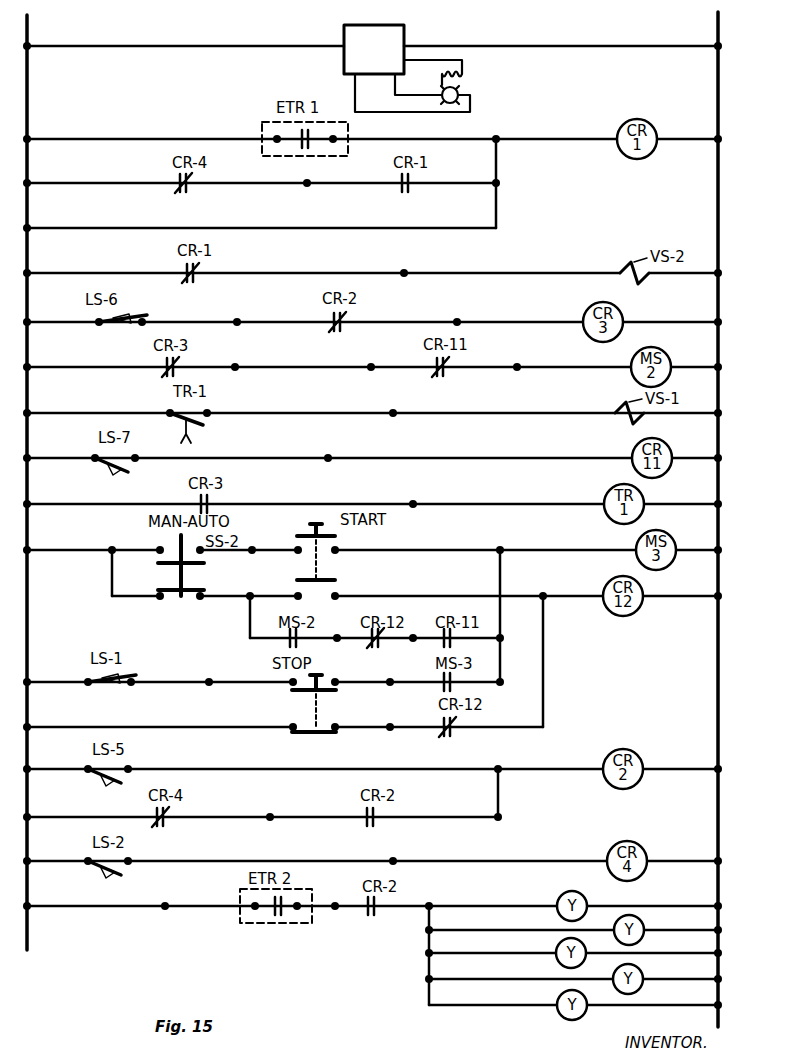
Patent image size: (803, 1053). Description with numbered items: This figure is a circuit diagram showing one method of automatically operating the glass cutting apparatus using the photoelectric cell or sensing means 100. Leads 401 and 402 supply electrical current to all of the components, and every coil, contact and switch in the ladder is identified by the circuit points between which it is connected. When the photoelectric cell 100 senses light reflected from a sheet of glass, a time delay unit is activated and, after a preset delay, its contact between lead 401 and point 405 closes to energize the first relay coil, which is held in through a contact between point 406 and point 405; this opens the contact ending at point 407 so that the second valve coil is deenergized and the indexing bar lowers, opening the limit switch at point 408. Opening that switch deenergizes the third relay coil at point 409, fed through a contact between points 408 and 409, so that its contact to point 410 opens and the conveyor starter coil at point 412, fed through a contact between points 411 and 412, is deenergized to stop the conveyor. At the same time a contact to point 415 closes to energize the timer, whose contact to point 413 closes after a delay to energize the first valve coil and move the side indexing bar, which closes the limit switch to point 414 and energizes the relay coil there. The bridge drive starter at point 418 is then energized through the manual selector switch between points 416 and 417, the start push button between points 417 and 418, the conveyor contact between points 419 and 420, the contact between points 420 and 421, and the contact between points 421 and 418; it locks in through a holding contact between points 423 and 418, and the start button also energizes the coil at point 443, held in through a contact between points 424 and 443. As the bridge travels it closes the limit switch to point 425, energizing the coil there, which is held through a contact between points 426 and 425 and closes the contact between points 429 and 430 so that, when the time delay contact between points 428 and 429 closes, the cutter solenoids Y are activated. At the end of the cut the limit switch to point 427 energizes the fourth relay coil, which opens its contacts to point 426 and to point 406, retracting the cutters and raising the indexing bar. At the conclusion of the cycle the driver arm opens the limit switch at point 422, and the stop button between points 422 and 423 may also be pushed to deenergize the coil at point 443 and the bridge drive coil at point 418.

The lead 401 is at (27, 14).
The lead 402 is at (718, 22).
The photoelectric cell 100 is at (344, 56).
The circuit point 405 is at (498, 127).
The circuit point 406 is at (326, 175).
The circuit point 407 is at (422, 262).
The circuit point 408 is at (251, 310).
The circuit point 409 is at (473, 310).
The circuit point 410 is at (250, 356).
The circuit point 411 is at (385, 356).
The circuit point 412 is at (532, 356).
The circuit point 413 is at (408, 403).
The circuit point 414 is at (344, 448).
The circuit point 415 is at (429, 494).
The circuit point 416 is at (112, 547).
The circuit point 417 is at (266, 533).
The circuit point 418 is at (517, 540).
The circuit point 419 is at (261, 585).
The circuit point 420 is at (342, 622).
The circuit point 421 is at (414, 620).
The circuit point 422 is at (223, 668).
The circuit point 423 is at (398, 672).
The circuit point 424 is at (405, 716).
The circuit point 425 is at (515, 760).
The circuit point 426 is at (285, 806).
The circuit point 427 is at (410, 852).
The circuit point 428 is at (180, 896).
The circuit point 429 is at (335, 903).
The circuit point 430 is at (445, 895).
The circuit point 443 is at (557, 585).